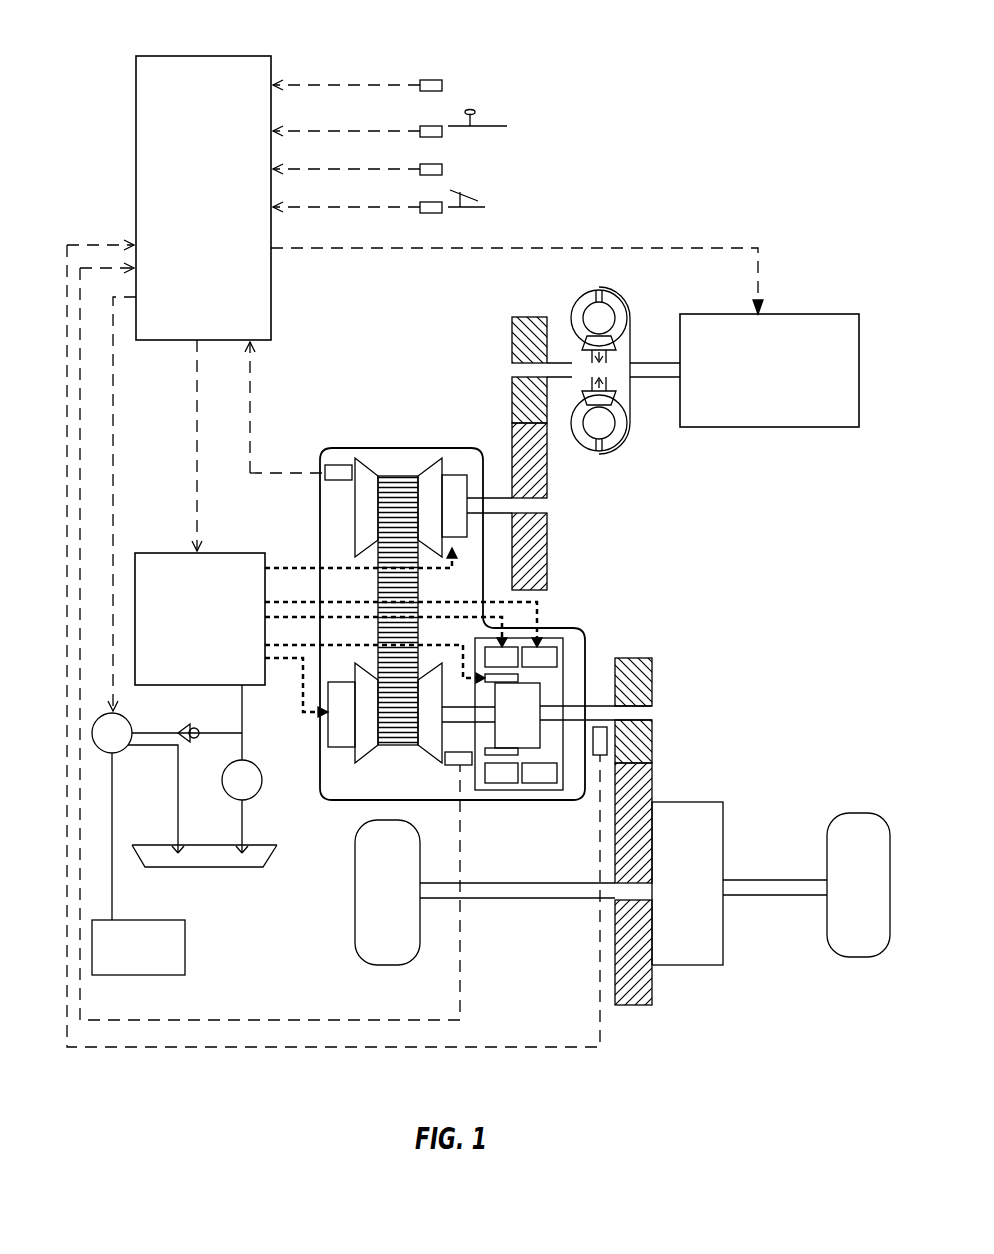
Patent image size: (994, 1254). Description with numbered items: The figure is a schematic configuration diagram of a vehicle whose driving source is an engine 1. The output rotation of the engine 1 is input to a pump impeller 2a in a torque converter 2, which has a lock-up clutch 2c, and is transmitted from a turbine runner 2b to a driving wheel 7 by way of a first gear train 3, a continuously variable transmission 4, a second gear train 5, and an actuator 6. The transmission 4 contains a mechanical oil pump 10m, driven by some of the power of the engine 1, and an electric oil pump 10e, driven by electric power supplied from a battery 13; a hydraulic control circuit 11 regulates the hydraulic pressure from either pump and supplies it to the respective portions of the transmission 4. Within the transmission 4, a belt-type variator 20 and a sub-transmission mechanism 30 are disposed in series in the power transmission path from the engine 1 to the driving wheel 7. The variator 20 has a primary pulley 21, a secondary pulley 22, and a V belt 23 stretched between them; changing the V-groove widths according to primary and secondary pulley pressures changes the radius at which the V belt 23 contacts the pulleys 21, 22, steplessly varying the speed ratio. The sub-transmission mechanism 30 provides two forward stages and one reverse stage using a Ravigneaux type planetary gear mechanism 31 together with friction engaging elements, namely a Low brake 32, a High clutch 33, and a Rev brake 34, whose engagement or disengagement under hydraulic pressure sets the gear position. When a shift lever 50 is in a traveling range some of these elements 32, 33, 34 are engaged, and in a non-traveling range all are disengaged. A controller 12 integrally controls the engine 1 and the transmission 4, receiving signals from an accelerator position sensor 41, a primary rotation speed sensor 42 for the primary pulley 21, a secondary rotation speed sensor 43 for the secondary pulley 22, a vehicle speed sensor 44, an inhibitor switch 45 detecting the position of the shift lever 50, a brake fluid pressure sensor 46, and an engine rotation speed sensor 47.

The engine 1 is at (833, 330).
The torque converter 2 is at (615, 352).
The pump impeller 2a is at (580, 312).
The turbine runner 2b is at (613, 452).
The lock-up clutch 2c is at (630, 395).
The first gear train 3 is at (521, 304).
The transmission 4 is at (470, 447).
The second gear train 5 is at (632, 1016).
The actuator 6 is at (688, 952).
The driving wheel 7 is at (388, 952).
The electric oil pump 10e is at (116, 755).
The mechanical oil pump 10m is at (232, 797).
The hydraulic control circuit 11 is at (153, 555).
The controller 12 is at (258, 66).
The battery 13 is at (175, 960).
The variator 20 is at (420, 475).
The primary pulley 21 is at (349, 506).
The secondary pulley 22 is at (390, 760).
The V belt 23 is at (410, 477).
The sub-transmission mechanism 30 is at (569, 691).
The Ravigneaux type planetary gear mechanism 31 is at (522, 698).
The Low brake 32 is at (505, 658).
The High clutch 33 is at (506, 752).
The Rev brake 34 is at (540, 658).
The accelerator position sensor 41 is at (432, 212).
The primary rotation speed sensor 42 is at (333, 465).
The secondary rotation speed sensor 43 is at (458, 768).
The vehicle speed sensor 44 is at (600, 726).
The inhibitor switch 45 is at (435, 128).
The brake fluid pressure sensor 46 is at (430, 171).
The engine rotation speed sensor 47 is at (432, 84).
The shift lever 50 is at (474, 110).